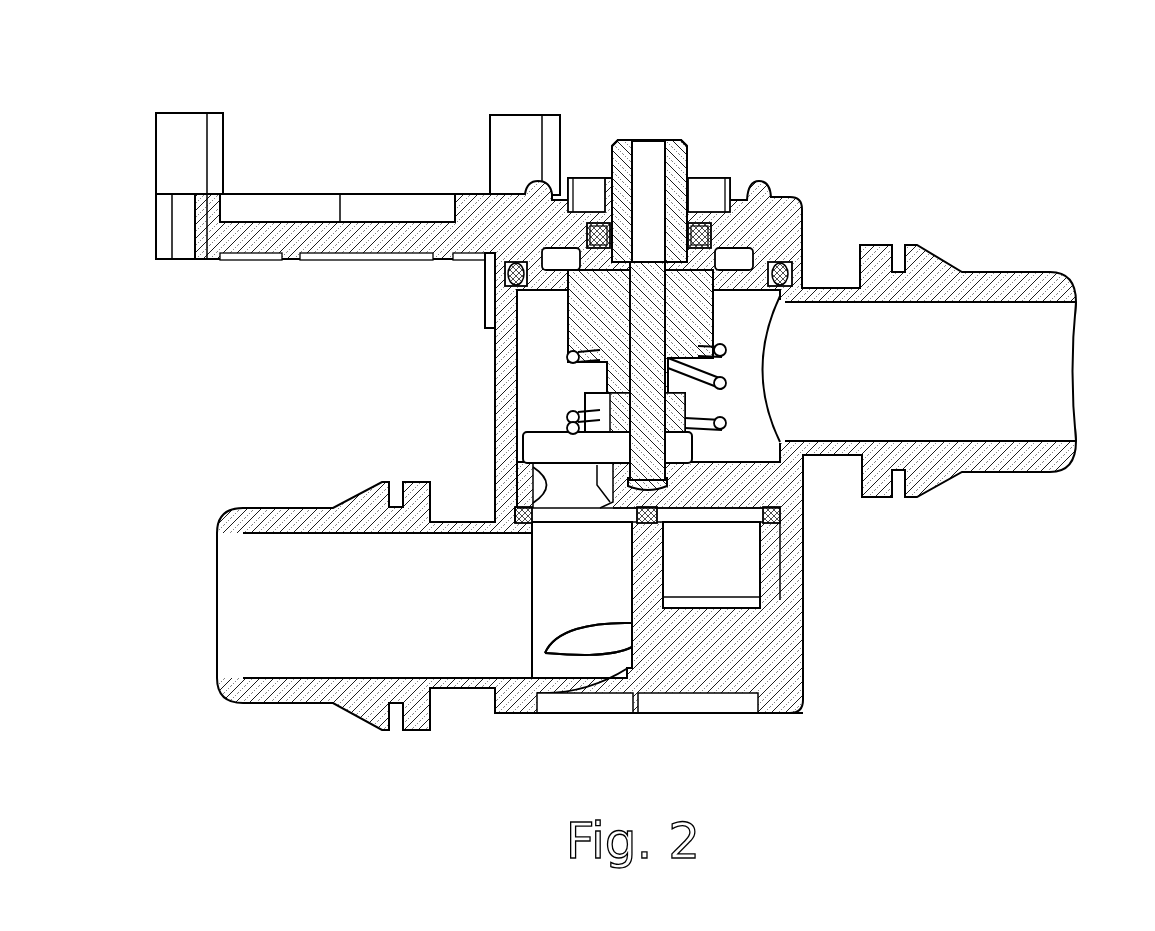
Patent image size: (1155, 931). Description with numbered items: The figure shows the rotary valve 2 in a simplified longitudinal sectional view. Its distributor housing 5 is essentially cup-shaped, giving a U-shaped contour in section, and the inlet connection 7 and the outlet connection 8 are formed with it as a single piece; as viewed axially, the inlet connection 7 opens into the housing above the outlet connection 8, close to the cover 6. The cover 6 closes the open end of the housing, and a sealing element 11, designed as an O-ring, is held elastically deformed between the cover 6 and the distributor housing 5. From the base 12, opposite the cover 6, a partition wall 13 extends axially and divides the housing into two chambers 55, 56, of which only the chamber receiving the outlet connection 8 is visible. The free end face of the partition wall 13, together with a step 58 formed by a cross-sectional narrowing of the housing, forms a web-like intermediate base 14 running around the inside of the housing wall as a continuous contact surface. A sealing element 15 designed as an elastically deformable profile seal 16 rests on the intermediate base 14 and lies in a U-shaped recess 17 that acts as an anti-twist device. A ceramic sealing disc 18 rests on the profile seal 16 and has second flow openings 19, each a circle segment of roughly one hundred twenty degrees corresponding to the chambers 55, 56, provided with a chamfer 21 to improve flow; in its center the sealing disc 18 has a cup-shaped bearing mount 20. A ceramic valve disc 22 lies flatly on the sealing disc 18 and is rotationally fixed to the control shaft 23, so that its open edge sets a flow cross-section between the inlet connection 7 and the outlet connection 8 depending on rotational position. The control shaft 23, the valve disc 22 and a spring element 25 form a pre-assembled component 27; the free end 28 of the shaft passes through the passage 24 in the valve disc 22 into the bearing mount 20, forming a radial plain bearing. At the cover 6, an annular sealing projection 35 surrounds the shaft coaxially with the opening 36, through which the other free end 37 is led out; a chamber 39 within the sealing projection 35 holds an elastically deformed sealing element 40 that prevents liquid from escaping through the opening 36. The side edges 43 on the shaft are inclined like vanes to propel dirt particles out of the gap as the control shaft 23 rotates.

The rotary valve 2 is at (1082, 117).
The distributor housing 5 is at (783, 657).
The cover 6 is at (285, 215).
The inlet connection 7 is at (1008, 277).
The outlet connection 8 is at (285, 700).
The sealing element 11 is at (745, 330).
The base 12 is at (812, 703).
The partition wall 13 is at (650, 585).
The intermediate base 14 is at (772, 528).
The sealing element 15 is at (773, 527).
The profile seal 16 is at (769, 530).
The recess 17 is at (533, 527).
The sealing disc 18 is at (511, 492).
The second flow openings 19 is at (550, 468).
The bearing mount 20 is at (737, 587).
The chamfer 21 is at (546, 656).
The valve disc 22 is at (549, 450).
The control shaft 23 is at (655, 312).
The passage 24 is at (660, 456).
The spring element 25 is at (735, 383).
The pre-assembled component 27 is at (787, 262).
The free end 28 is at (676, 472).
The sealing projection 35 is at (783, 262).
The opening 36 is at (608, 222).
The other free end 37 is at (693, 146).
The chamber 39 is at (596, 222).
The sealing element 40 is at (703, 222).
The side edges 43 is at (575, 378).
The chamber 55 is at (597, 603).
The chamber 56 is at (667, 510).
The step 58 is at (510, 515).